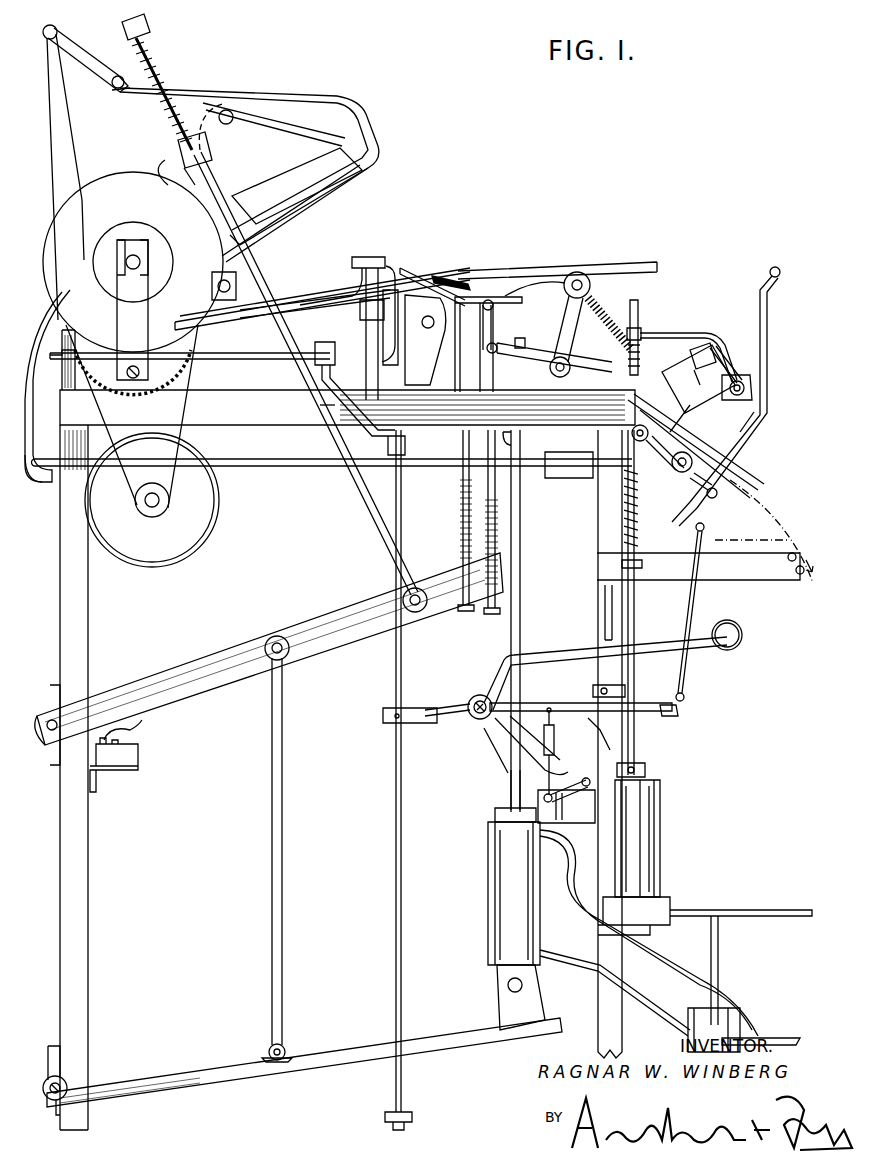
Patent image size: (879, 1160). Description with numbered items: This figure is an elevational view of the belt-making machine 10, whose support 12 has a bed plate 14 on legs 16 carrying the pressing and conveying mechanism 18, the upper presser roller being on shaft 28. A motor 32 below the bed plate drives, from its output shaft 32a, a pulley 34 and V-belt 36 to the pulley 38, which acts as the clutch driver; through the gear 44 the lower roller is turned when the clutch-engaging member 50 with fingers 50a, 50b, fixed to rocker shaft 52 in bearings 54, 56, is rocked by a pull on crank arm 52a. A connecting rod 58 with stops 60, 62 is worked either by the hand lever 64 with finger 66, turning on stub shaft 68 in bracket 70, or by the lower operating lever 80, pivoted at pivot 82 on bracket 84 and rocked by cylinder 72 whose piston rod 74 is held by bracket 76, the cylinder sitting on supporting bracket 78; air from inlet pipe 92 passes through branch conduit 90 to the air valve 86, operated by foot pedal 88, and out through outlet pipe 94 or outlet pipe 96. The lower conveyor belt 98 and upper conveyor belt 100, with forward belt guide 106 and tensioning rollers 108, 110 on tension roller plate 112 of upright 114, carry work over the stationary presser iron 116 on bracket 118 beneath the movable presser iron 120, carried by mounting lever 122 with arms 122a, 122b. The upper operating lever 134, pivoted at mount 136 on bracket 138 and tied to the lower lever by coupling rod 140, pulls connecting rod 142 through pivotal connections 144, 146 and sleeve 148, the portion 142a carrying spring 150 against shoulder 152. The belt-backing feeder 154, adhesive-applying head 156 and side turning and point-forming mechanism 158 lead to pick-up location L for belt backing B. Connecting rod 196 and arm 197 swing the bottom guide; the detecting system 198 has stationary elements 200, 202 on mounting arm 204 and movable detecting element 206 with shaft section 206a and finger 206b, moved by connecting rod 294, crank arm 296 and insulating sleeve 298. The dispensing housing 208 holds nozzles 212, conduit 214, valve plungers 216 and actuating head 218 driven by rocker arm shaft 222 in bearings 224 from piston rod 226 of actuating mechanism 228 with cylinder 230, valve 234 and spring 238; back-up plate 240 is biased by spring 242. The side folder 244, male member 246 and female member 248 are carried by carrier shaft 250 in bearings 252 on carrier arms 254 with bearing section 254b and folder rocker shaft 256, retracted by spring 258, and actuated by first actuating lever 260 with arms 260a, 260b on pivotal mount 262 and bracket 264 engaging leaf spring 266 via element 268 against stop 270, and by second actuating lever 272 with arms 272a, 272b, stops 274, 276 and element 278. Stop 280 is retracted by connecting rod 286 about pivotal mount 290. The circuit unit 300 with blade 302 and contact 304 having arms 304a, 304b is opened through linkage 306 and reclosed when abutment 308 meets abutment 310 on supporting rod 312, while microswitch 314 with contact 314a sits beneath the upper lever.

The belt-making machine 10 is at (751, 108).
The support 12 is at (57, 606).
The bed plate 14 is at (256, 418).
The legs 16 is at (82, 648).
The pressing and conveying mechanism 18 is at (402, 203).
The shaft 28 is at (125, 263).
The motor 32 is at (158, 556).
The output shaft 32a is at (150, 508).
The pulley 34 is at (160, 507).
The V-belt 36 is at (190, 416).
The pulley 38 is at (108, 178).
The gear 44 is at (160, 385).
The clutch-engaging member 50 is at (122, 308).
The finger 50a is at (120, 238).
The finger 50b is at (146, 238).
The rocker shaft 52 is at (268, 352).
The crank arm 52a is at (358, 412).
The bearing 54 is at (64, 368).
The bearing 56 is at (320, 405).
The connecting rod 58 is at (394, 764).
The first stop 60 is at (382, 716).
The second stop 62 is at (388, 1118).
The hand lever 64 is at (556, 655).
The projecting finger 66 is at (440, 706).
The stub shaft 68 is at (482, 695).
The bracket 70 is at (484, 728).
The cylinder 72 is at (490, 876).
The piston rod 74 is at (520, 620).
The bracket 76 is at (503, 438).
The supporting bracket 78 is at (506, 1004).
The lower operating lever 80 is at (330, 1052).
The pivot 82 is at (56, 1050).
The bracket 84 is at (44, 1104).
The air valve 86 is at (742, 1005).
The foot pedal 88 is at (778, 1036).
The branch conduit 90 is at (720, 955).
The air inlet pipe 92 is at (762, 910).
The outlet pipe 94 is at (664, 972).
The outlet pipe 96 is at (586, 975).
The lower conveyor belt 98 is at (296, 296).
The upper conveyor belt 100 is at (282, 230).
The forward belt guide 106 is at (368, 132).
The tensioning roller 108 is at (44, 36).
The tensioning roller 110 is at (110, 90).
The tension roller plate 112 is at (95, 50).
The upright 114 is at (58, 150).
The stationary presser iron 116 is at (262, 305).
The upstanding bracket 118 is at (320, 312).
The movable presser iron 120 is at (330, 176).
The mounting lever 122 is at (54, 316).
The arm 122a is at (165, 160).
The arm 122b is at (36, 482).
The upper operating lever 134 is at (232, 650).
The pivotal mount 136 is at (48, 745).
The bracket 138 is at (46, 700).
The coupling rod 140 is at (284, 935).
The connecting rod 142 is at (342, 512).
The portion 142a is at (170, 88).
The pivotal connection 144 is at (416, 612).
The pivotal connection 146 is at (210, 92).
The mounting sleeve 148 is at (210, 160).
The spring 150 is at (160, 72).
The shoulder 152 is at (148, 30).
The belt-backing feeder 154 is at (742, 466).
The adhesive-applying head 156 is at (770, 412).
The side turning and point-forming mechanism 158 is at (656, 260).
The connecting rod 196 is at (690, 676).
The arm 197 is at (672, 718).
The detecting system 198 is at (800, 598).
The stationary detecting element 200 is at (788, 560).
The stationary detecting element 202 is at (797, 575).
The mounting arm 204 is at (676, 570).
The detecting element 206 is at (775, 344).
The supporting shaft section 206a is at (608, 498).
The detecting finger 206b is at (810, 540).
The dispensing housing 208 is at (675, 375).
The dispensing nozzles 212 is at (700, 430).
The flexible conduit 214 is at (735, 418).
The valve plungers 216 is at (694, 350).
The actuating head 218 is at (718, 346).
The rocker arm shaft 222 is at (752, 389).
The bearings 224 is at (745, 387).
The piston rod 226 is at (636, 626).
The actuating mechanism 228 is at (664, 333).
The cylinder 230 is at (655, 862).
The solenoid controlled valve 234 is at (670, 906).
The spring 238 is at (638, 540).
The back-up plate 240 is at (722, 498).
The spring 242 is at (684, 474).
The side folder 244 is at (634, 258).
The male point-forming member 246 is at (444, 276).
The female point-forming member 248 is at (412, 268).
The carrier shaft 250 is at (560, 378).
The bearings 252 is at (548, 348).
The carrier arms 254 is at (584, 272).
The bearing section 254b is at (574, 272).
The folder rocker shaft 256 is at (586, 276).
The spring 258 is at (614, 316).
The first actuating lever 260 is at (490, 298).
The arm 260a is at (500, 298).
The arm 260b is at (472, 296).
The pivotal mount 262 is at (484, 296).
The upstanding bracket 264 is at (486, 380).
The leaf spring 266 is at (522, 290).
The resilient connecting element 268 is at (460, 522).
The adjustable stop 270 is at (440, 340).
The second actuating lever 272 is at (595, 355).
The arm 272a is at (603, 370).
The arm 272b is at (528, 367).
The adjustable stop 274 is at (630, 330).
The adjustable stop 276 is at (520, 338).
The resilient connecting element 278 is at (500, 540).
The stop 280 is at (366, 257).
The connecting rod 286 is at (308, 300).
The pivotal mount 290 is at (212, 290).
The connecting rod 294 is at (276, 467).
The crank arm 296 is at (650, 445).
The insulating sleeve 298 is at (570, 478).
The circuit making and breaking unit 300 is at (590, 810).
The stationary contact blade 302 is at (492, 806).
The movable contact 304 is at (570, 820).
The arm 304a is at (568, 762).
The arm 304b is at (630, 750).
The self-adjusting linkage 306 is at (512, 742).
The abutment 308 is at (648, 770).
The abutment 310 is at (628, 690).
The supporting rod 312 is at (590, 678).
The microswitch 314 is at (138, 756).
The switch contact 314a is at (142, 722).
The pick-up location L is at (386, 247).
The belt backing B is at (745, 490).